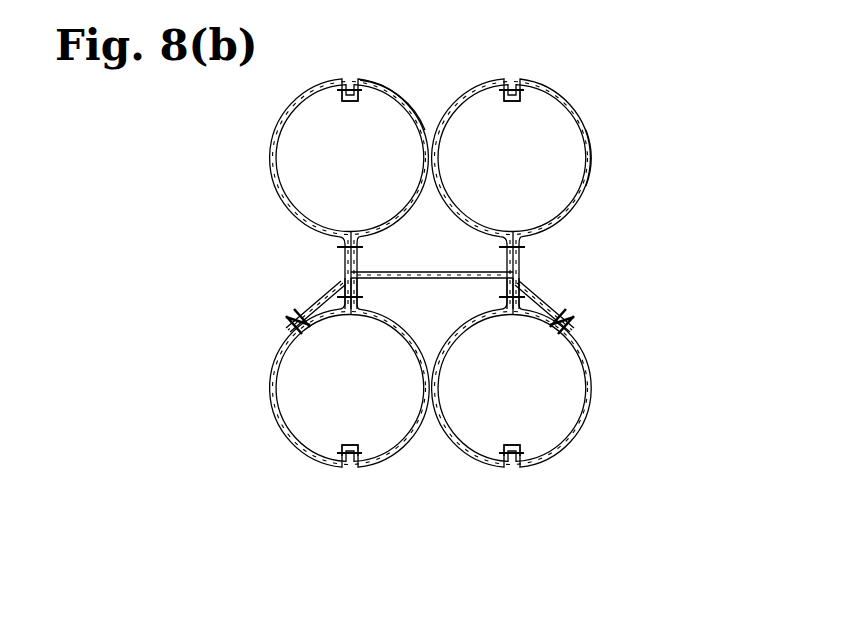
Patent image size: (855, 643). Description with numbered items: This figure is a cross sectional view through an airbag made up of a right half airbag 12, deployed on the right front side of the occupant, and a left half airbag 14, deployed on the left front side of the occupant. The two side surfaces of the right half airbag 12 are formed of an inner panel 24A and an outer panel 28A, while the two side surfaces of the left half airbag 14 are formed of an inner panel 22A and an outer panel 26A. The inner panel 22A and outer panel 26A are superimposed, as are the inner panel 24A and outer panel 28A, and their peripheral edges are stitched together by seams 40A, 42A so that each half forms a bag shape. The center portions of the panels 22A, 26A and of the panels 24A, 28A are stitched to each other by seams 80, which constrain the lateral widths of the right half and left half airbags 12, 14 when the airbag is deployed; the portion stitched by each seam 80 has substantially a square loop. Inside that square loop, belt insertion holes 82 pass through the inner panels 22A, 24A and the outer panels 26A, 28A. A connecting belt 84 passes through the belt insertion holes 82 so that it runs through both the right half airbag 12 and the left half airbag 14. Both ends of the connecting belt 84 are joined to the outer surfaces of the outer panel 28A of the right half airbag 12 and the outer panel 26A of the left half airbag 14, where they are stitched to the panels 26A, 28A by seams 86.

The right half airbag 12 is at (480, 238).
The left half airbag 14 is at (288, 480).
The inner panel 22A is at (443, 194).
The inner panel 24A is at (400, 92).
The outer panel 26A is at (596, 173).
The outer panel 28A is at (280, 192).
The seam 40A is at (496, 98).
The seam 42A is at (363, 98).
The seam 80 is at (335, 248).
The belt insertion hole 82 is at (341, 273).
The connecting belt 84 is at (424, 271).
The seam 86 is at (270, 310).